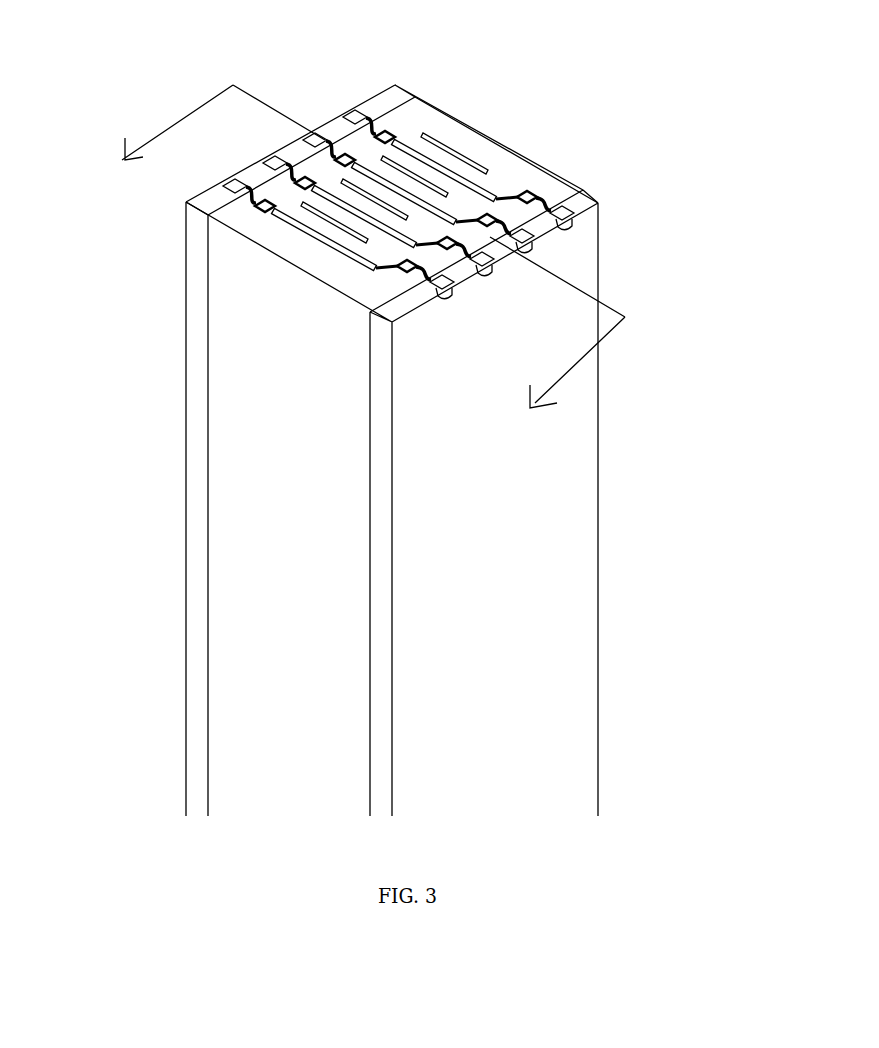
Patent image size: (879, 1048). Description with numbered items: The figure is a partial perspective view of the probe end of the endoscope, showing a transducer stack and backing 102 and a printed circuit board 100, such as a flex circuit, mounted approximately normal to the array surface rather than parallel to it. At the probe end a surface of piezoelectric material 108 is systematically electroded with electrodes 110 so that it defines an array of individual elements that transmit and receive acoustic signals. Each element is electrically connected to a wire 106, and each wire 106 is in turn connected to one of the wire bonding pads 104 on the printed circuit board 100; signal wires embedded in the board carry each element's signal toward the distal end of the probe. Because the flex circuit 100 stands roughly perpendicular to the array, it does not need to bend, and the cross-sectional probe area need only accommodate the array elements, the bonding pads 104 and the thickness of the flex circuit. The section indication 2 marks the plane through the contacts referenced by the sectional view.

The flex circuit, printed circuit board 100 is at (196, 240).
The transducer stack, backing 102 is at (298, 422).
The wire bonding pads 104 is at (267, 203).
The wire to/from array element 106 is at (423, 270).
The piezoelectric material 108 is at (562, 182).
The electrodes 110 is at (462, 156).
The section line 2- 2 is at (361, 269).